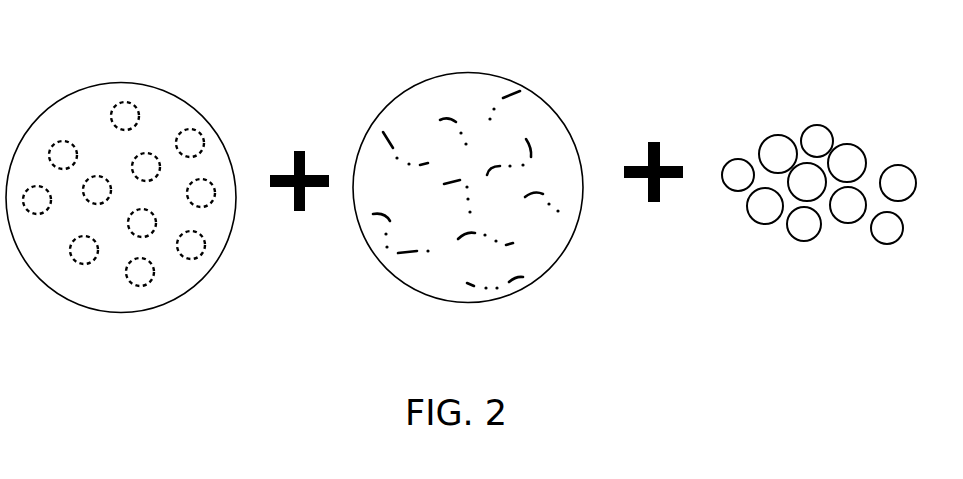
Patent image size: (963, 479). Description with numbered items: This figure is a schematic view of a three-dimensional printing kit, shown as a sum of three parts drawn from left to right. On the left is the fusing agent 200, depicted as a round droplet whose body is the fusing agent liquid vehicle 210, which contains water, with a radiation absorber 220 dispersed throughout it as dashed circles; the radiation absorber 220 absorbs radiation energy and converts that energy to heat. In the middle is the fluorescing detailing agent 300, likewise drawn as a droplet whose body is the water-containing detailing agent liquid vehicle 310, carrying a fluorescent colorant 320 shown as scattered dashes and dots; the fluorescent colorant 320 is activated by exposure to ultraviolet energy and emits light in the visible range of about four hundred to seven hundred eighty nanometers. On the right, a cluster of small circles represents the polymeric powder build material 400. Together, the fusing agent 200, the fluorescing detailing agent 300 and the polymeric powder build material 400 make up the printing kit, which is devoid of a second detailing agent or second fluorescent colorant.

The fusing agent 200 is at (121, 186).
The fusing agent liquid vehicle 210 is at (78, 279).
The radiation absorber 220 is at (124, 108).
The fluorescing detailing agent 300 is at (446, 169).
The detailing agent liquid vehicle 310 is at (468, 112).
The fluorescent colorant 320 is at (388, 247).
The polymeric powder build material 400 is at (799, 110).